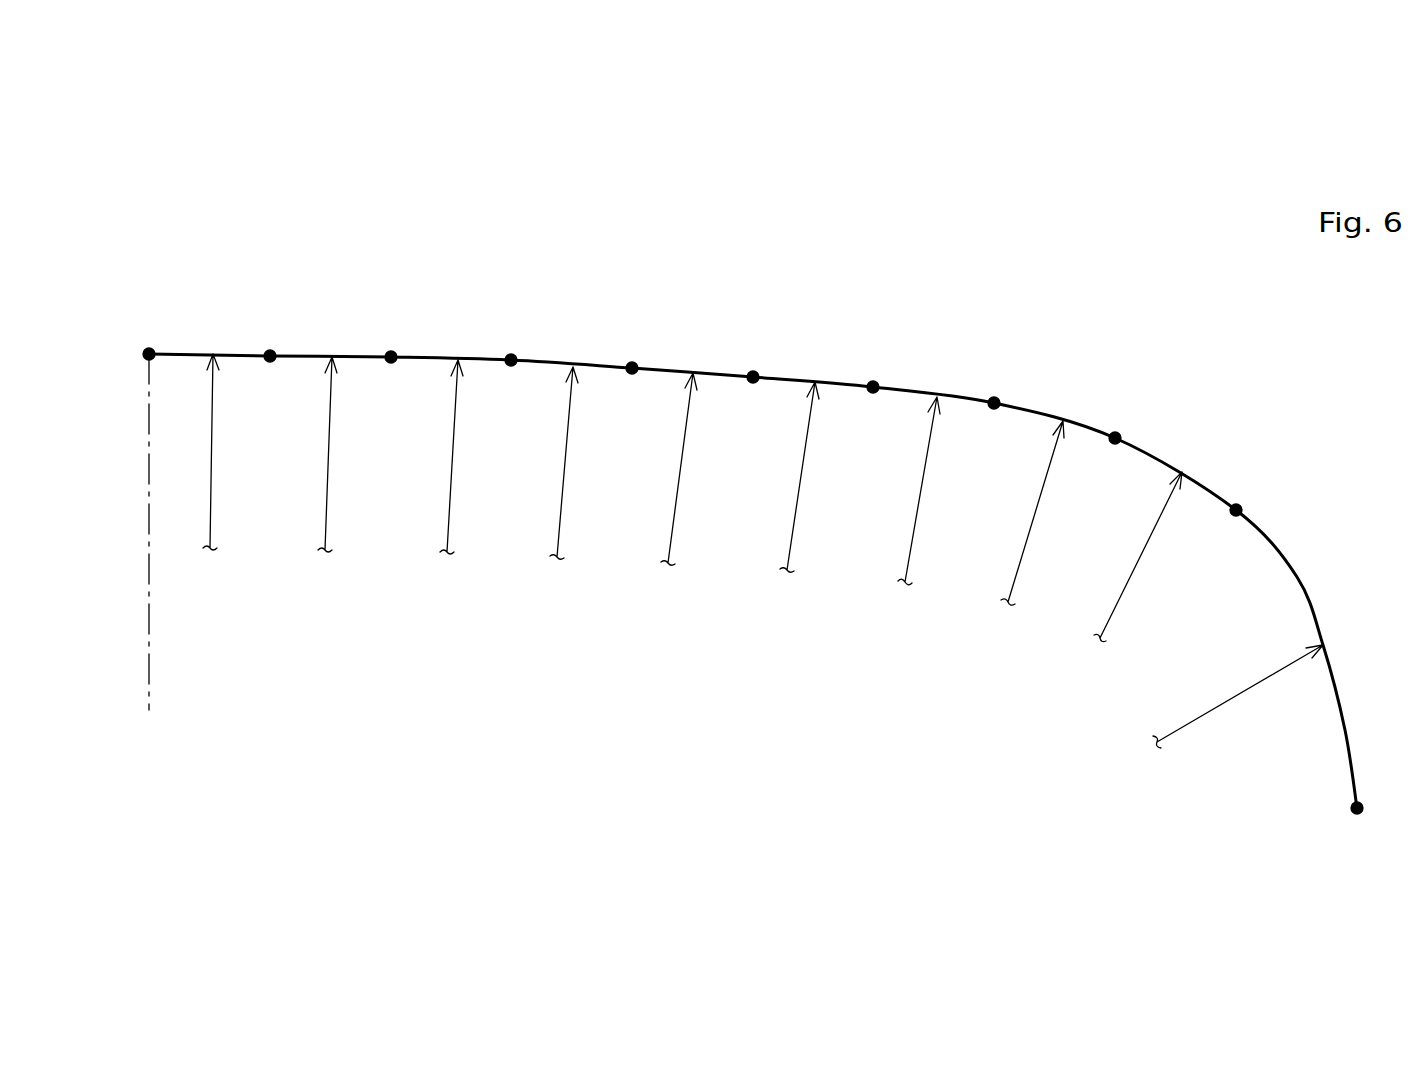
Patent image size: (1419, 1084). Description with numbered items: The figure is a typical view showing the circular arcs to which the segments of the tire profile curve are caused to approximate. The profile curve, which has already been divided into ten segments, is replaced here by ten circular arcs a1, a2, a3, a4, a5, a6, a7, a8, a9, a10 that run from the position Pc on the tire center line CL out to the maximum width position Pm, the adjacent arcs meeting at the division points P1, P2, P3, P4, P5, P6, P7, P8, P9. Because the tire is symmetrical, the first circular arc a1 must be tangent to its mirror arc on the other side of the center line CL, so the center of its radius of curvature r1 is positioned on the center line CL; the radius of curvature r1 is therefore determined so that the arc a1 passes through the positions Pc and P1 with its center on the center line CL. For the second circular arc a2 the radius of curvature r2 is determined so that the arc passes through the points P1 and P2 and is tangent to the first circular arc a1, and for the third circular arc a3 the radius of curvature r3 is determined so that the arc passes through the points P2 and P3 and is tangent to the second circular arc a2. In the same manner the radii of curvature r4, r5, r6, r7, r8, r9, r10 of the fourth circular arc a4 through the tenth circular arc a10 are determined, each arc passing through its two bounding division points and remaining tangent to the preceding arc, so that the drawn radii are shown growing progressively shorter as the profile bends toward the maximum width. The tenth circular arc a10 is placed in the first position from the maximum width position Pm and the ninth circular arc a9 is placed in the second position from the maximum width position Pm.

The position on center line Pc is at (149, 348).
The division point P1 is at (270, 350).
The division point P2 is at (391, 351).
The division point P3 is at (511, 354).
The division point P4 is at (632, 362).
The division point P5 is at (753, 371).
The division point P6 is at (874, 381).
The division point P7 is at (995, 397).
The division point P8 is at (1115, 432).
The division point P9 is at (1237, 503).
The maximum width position Pm is at (1359, 802).
The first circular arc a1 is at (213, 353).
The second circular arc a2 is at (332, 355).
The third circular arc a3 is at (458, 358).
The fourth circular arc a4 is at (573, 365).
The fifth circular arc a5 is at (693, 372).
The sixth circular arc a6 is at (815, 380).
The seventh circular arc a7 is at (937, 395).
The eighth circular arc a8 is at (1063, 419).
The ninth circular arc a9 is at (1181, 468).
The tenth circular arc a10 is at (1297, 575).
The radius of curvature r1 is at (196, 452).
The radius of curvature r2 is at (311, 454).
The radius of curvature r3 is at (435, 457).
The radius of curvature r4 is at (552, 463).
The radius of curvature r5 is at (670, 469).
The radius of curvature r6 is at (792, 477).
The radius of curvature r7 is at (910, 491).
The radius of curvature r8 is at (1031, 513).
The radius of curvature r9 is at (1138, 557).
The radius of curvature r10 is at (1238, 696).
The center line CL is at (149, 605).